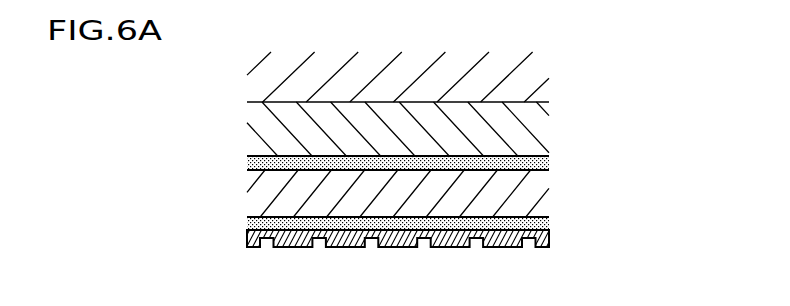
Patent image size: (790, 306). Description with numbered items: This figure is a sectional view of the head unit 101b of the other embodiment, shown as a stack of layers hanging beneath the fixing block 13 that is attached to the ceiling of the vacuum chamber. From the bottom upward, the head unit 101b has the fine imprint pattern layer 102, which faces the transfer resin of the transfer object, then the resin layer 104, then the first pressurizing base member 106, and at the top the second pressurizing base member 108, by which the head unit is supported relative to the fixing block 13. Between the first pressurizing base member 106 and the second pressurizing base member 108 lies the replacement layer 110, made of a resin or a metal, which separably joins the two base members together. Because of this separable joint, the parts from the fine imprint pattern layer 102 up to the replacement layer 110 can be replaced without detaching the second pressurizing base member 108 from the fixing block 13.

The fixing block 13 is at (528, 77).
The second pressurizing base member 108 is at (518, 135).
The replacement layer 110 is at (570, 159).
The first pressurizing base member 106 is at (535, 193).
The resin layer 104 is at (547, 222).
The fine imprint pattern layer 102 is at (434, 253).
The head unit 101b is at (476, 193).